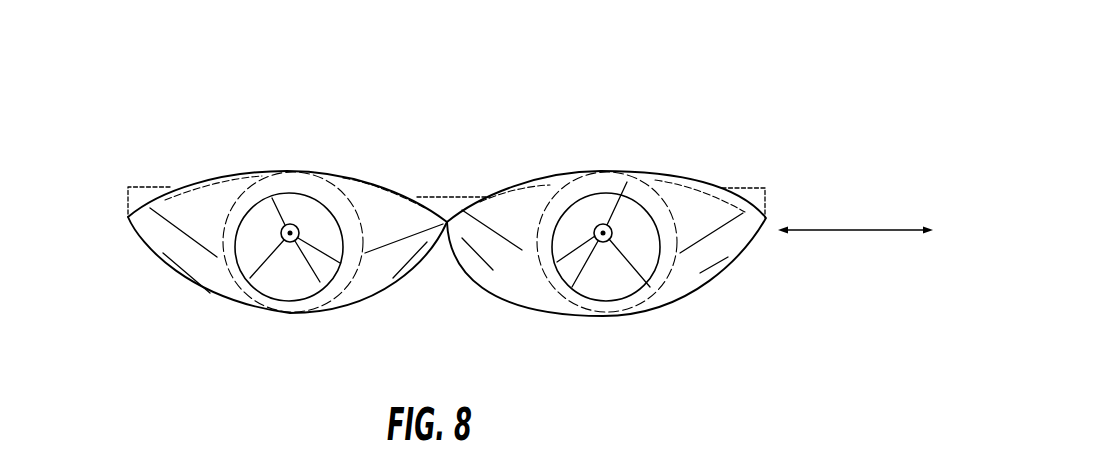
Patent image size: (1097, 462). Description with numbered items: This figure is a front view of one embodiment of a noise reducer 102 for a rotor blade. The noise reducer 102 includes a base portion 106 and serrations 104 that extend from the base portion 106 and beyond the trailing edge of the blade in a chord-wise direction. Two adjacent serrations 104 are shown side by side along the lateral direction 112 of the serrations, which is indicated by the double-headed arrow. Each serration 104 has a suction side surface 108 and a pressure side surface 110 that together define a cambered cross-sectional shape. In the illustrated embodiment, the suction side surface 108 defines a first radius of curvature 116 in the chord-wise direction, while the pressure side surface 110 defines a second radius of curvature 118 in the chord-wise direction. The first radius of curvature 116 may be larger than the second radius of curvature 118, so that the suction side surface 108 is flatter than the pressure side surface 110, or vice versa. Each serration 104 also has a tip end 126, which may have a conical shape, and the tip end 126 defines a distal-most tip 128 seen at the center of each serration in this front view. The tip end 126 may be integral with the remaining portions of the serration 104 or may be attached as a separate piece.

The noise reducer 102 is at (763, 96).
The serration 104 is at (160, 277).
The base portion 106 is at (143, 178).
The suction side surface 108 is at (222, 173).
The pressure side surface 110 is at (231, 295).
The lateral direction 112 is at (842, 229).
The first radius of curvature 116 is at (281, 171).
The second radius of curvature 118 is at (290, 314).
The tip end 126 is at (525, 252).
The distal-most tip 128 is at (300, 231).